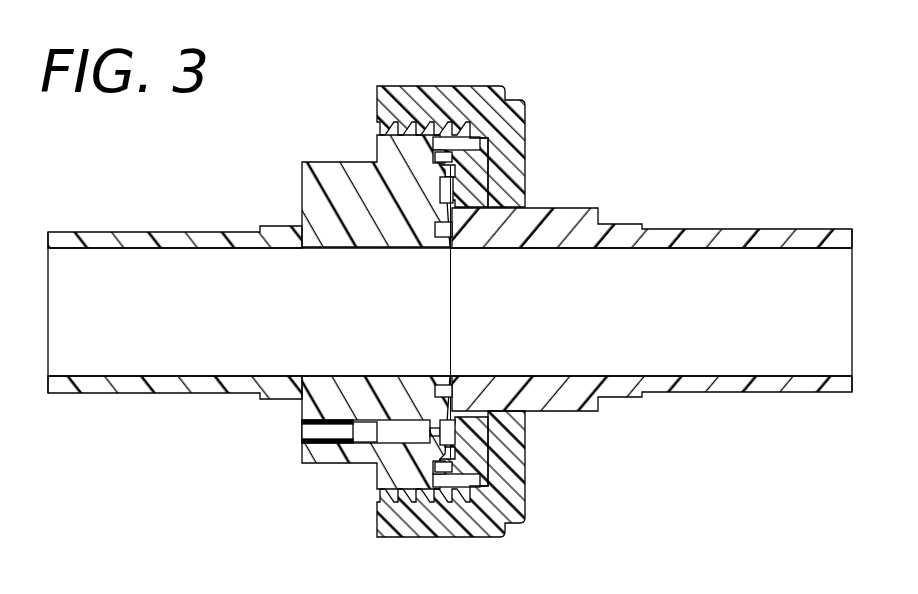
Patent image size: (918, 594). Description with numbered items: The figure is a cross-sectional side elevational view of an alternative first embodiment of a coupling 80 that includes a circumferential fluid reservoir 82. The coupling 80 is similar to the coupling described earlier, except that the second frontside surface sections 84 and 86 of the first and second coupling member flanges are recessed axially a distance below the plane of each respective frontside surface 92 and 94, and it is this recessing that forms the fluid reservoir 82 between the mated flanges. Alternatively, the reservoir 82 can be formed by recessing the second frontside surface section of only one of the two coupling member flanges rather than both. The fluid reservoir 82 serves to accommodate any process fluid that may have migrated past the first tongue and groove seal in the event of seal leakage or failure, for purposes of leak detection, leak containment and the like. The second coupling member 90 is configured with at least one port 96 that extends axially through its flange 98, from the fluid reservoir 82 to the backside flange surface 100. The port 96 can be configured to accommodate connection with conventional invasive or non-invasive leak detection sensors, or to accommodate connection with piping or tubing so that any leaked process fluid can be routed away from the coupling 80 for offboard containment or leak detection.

The coupling 80 is at (300, 125).
The fluid reservoir 82 is at (453, 190).
The second frontside surface section 84 is at (440, 190).
The second frontside surface section 86 is at (458, 437).
The second coupling member 90 is at (262, 205).
The frontside surface 92 is at (420, 235).
The frontside surface 94 is at (475, 380).
The port 96 is at (387, 430).
The flange 98 is at (340, 180).
The backside flange surface 100 is at (300, 411).